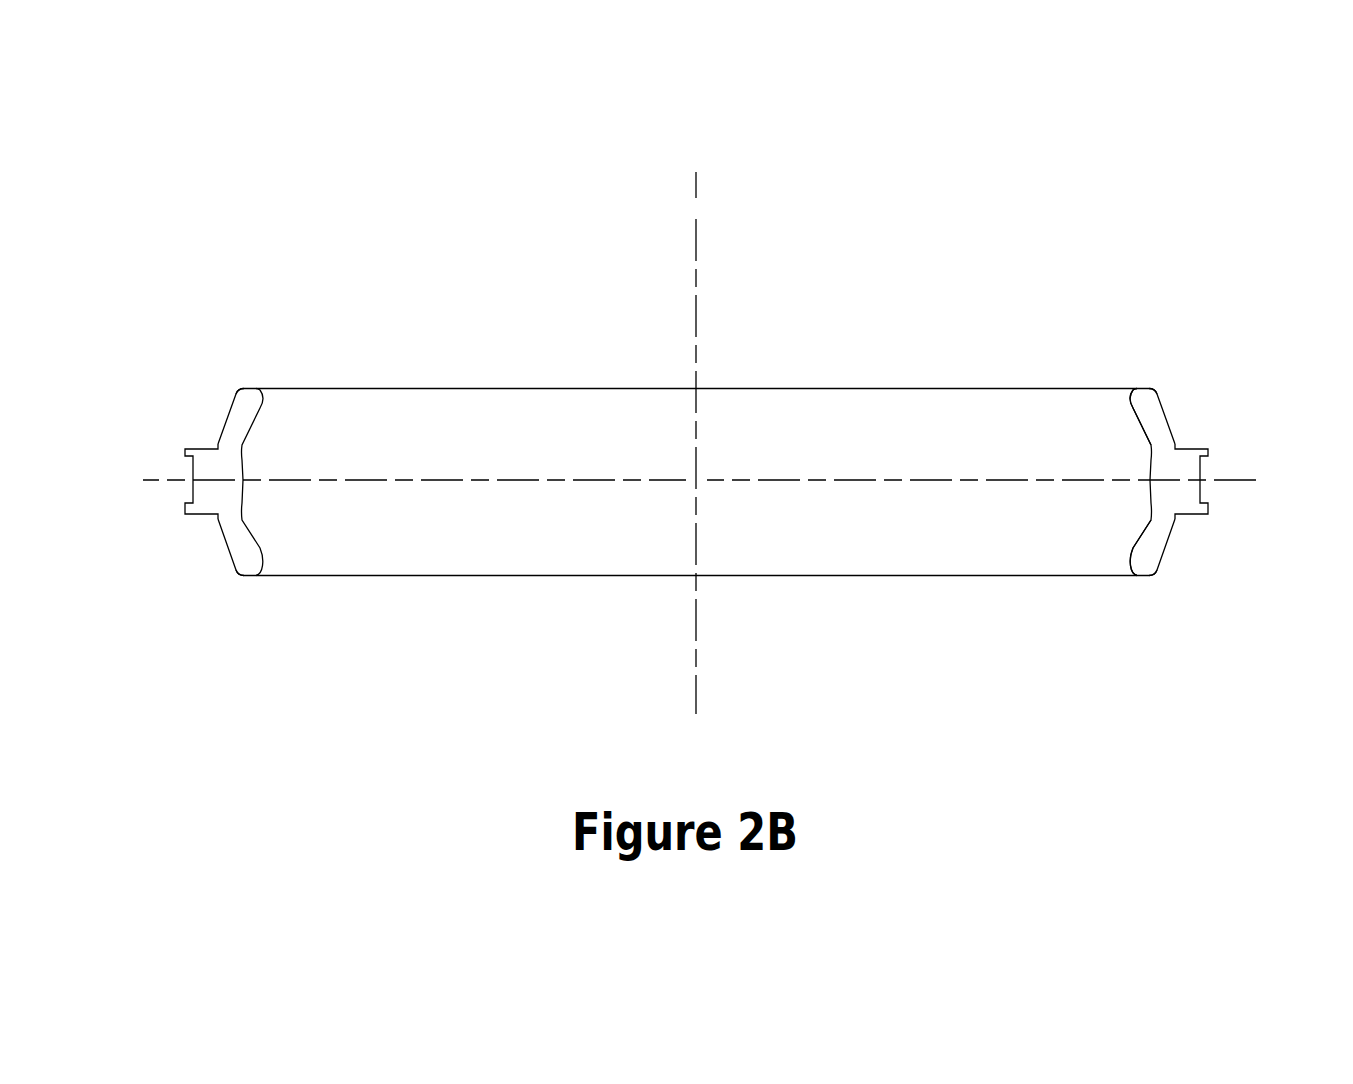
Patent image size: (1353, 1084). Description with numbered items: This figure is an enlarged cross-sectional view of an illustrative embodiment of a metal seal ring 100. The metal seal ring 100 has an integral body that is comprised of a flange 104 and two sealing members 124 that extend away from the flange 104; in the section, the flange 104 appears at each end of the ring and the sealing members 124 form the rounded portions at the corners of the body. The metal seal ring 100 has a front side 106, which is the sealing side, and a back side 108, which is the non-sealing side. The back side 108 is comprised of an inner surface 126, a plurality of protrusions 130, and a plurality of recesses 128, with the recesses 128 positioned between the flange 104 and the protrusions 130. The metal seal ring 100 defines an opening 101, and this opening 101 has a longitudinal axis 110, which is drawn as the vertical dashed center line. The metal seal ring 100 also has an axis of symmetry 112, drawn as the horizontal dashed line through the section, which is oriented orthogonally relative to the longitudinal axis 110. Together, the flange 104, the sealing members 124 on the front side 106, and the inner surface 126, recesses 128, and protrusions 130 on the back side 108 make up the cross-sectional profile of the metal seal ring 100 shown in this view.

The metal seal ring 100 is at (250, 327).
The opening 101 is at (810, 348).
The flange 104 is at (198, 493).
The front side 106 is at (218, 413).
The back side 108 is at (288, 543).
The longitudinal axis 110 is at (697, 243).
The axis of symmetry 112 is at (288, 477).
The sealing member 124 is at (247, 403).
The inner surface 126 is at (1148, 496).
The recess 128 is at (1148, 441).
The protrusion 130 is at (1145, 436).